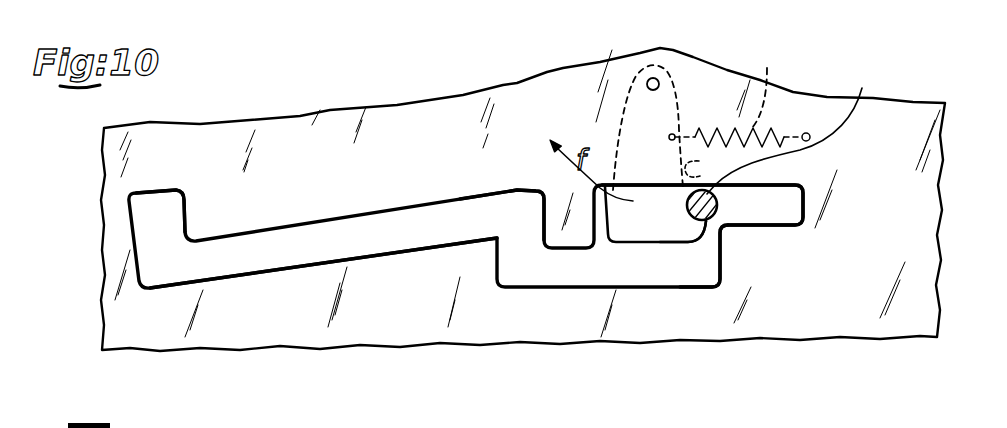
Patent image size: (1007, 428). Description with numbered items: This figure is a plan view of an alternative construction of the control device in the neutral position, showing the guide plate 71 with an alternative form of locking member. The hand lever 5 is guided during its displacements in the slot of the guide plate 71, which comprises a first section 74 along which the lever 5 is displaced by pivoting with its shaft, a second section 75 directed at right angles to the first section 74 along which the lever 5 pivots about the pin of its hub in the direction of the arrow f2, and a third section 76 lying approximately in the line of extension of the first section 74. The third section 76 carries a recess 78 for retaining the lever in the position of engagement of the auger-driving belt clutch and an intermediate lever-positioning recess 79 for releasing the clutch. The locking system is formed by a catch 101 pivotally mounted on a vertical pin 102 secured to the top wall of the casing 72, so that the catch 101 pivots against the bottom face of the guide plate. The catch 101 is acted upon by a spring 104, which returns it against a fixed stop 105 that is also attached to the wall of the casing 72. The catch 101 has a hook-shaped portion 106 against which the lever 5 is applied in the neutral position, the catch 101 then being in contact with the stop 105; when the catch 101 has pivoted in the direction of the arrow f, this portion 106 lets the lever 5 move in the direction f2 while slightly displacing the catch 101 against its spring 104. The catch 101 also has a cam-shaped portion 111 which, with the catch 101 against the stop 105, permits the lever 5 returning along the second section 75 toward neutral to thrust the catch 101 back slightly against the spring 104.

The casing 72 is at (243, 331).
The guide plate 71 is at (368, 212).
The recess 78 is at (176, 190).
The intermediate lever-positioning recess 79 is at (516, 188).
The third section 76 is at (322, 268).
The second section 75 is at (711, 272).
The first section 74 is at (777, 188).
The catch 101 is at (651, 226).
The cam portion 111 is at (704, 233).
The hand lever 5 is at (718, 206).
The vertical pin 102 is at (647, 80).
The spring 104 is at (739, 94).
The fixed stop 105 is at (699, 167).
The hook-shaped portion 106 is at (797, 129).